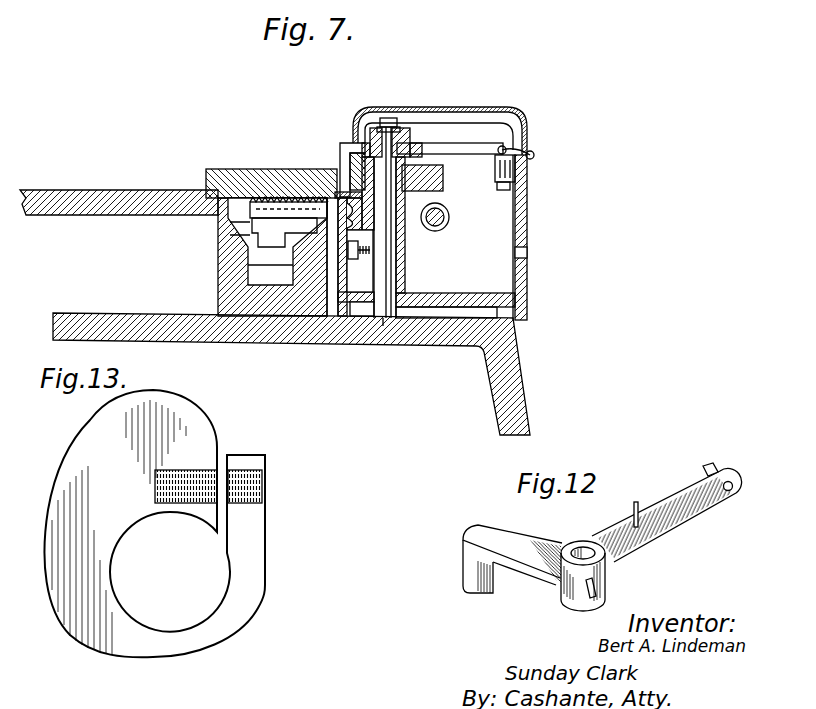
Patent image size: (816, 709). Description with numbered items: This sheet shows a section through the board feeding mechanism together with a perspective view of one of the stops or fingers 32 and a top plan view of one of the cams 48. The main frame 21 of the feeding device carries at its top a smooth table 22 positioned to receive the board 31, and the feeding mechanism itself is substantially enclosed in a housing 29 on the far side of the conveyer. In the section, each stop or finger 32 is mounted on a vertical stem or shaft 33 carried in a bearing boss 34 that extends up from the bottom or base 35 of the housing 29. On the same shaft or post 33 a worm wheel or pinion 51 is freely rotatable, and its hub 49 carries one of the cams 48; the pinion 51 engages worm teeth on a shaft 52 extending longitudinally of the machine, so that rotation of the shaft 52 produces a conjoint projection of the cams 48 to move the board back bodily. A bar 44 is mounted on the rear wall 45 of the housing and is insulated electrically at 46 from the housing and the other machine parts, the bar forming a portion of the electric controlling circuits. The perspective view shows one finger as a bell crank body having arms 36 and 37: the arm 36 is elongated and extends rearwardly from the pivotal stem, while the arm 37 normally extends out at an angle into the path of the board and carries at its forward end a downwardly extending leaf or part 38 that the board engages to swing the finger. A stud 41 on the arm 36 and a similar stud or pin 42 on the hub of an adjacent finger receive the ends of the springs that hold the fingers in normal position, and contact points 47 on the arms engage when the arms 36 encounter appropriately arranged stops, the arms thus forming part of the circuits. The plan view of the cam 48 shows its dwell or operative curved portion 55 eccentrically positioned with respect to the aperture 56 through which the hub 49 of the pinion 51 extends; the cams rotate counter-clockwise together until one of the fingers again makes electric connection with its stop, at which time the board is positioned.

In FIG. 7, the main frame 21 is at (512, 368).
In FIG. 7, the table 22 is at (104, 190).
In FIG. 7, the housing 29 is at (516, 270).
In FIG. 7, the board 31 is at (257, 168).
In FIG. 12, the stops or fingers 32 is at (618, 557).
In FIG. 7, the vertical stem or shaft 33 is at (382, 320).
In FIG. 7, the bearing boss 34 is at (398, 272).
In FIG. 7, the bottom or base 35 is at (457, 307).
In FIG. 7, the arm 36 is at (457, 143).
In FIG. 12, the arm 36 is at (660, 518).
In FIG. 12, the arm 37 is at (528, 553).
In FIG. 12, the downwardly extending leaf or part 38 is at (473, 585).
In FIG. 12, the stud 41 is at (637, 500).
In FIG. 12, the stud or pin 42 is at (590, 596).
In FIG. 7, the bar 44 is at (522, 146).
In FIG. 7, the rear wall 45 is at (527, 205).
In FIG. 7, the insulation 46 is at (515, 170).
In FIG. 12, the contact points 47 is at (708, 468).
In FIG. 7, the cam 48 is at (441, 189).
In FIG. 13, the cam 48 is at (202, 428).
In FIG. 7, the hub 49 is at (352, 162).
In FIG. 7, the worm wheel or pinion 51 is at (407, 228).
In FIG. 7, the shaft 52 is at (449, 219).
In FIG. 13, the dwell or operative curved portion 55 is at (112, 417).
In FIG. 13, the aperture 56 is at (180, 570).